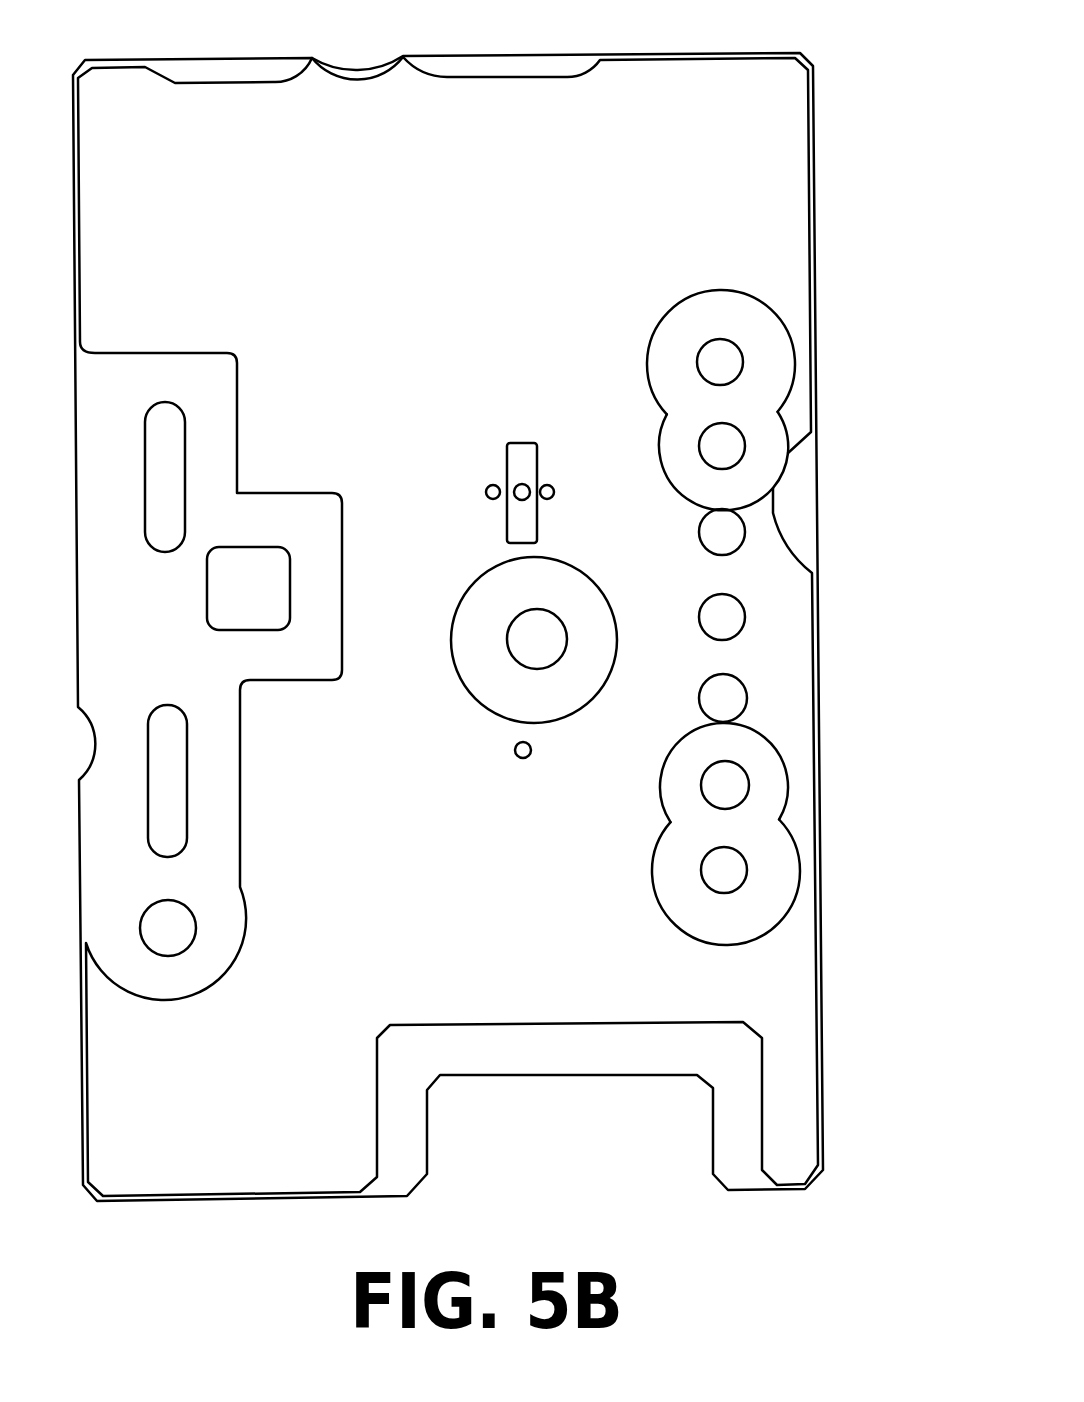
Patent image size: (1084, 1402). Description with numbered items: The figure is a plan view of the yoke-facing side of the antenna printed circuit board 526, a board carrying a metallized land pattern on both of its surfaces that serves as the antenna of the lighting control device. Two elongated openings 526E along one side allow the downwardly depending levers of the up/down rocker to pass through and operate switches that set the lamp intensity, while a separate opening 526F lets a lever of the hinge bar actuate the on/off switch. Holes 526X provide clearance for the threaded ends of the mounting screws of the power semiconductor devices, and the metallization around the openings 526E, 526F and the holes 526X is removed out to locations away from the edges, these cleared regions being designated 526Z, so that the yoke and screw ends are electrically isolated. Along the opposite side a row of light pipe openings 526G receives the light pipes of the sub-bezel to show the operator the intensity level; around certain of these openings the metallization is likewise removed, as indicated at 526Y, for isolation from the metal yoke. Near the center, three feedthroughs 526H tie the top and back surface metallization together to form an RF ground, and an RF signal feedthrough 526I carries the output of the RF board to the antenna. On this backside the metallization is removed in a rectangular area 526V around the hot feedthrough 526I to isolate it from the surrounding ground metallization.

The antenna printed circuit board 526 is at (745, 39).
The removed metallization areas 526Z is at (160, 372).
The elongated openings 526E is at (177, 453).
The opening 526F is at (223, 590).
The rectangular area 526V is at (532, 532).
The feedthroughs 526H is at (495, 485).
The RF signal feedthrough 526I is at (517, 498).
The holes 526X is at (523, 638).
The light pipe openings 526G is at (716, 358).
The removed metallization around light pipe openings 526Y is at (767, 360).